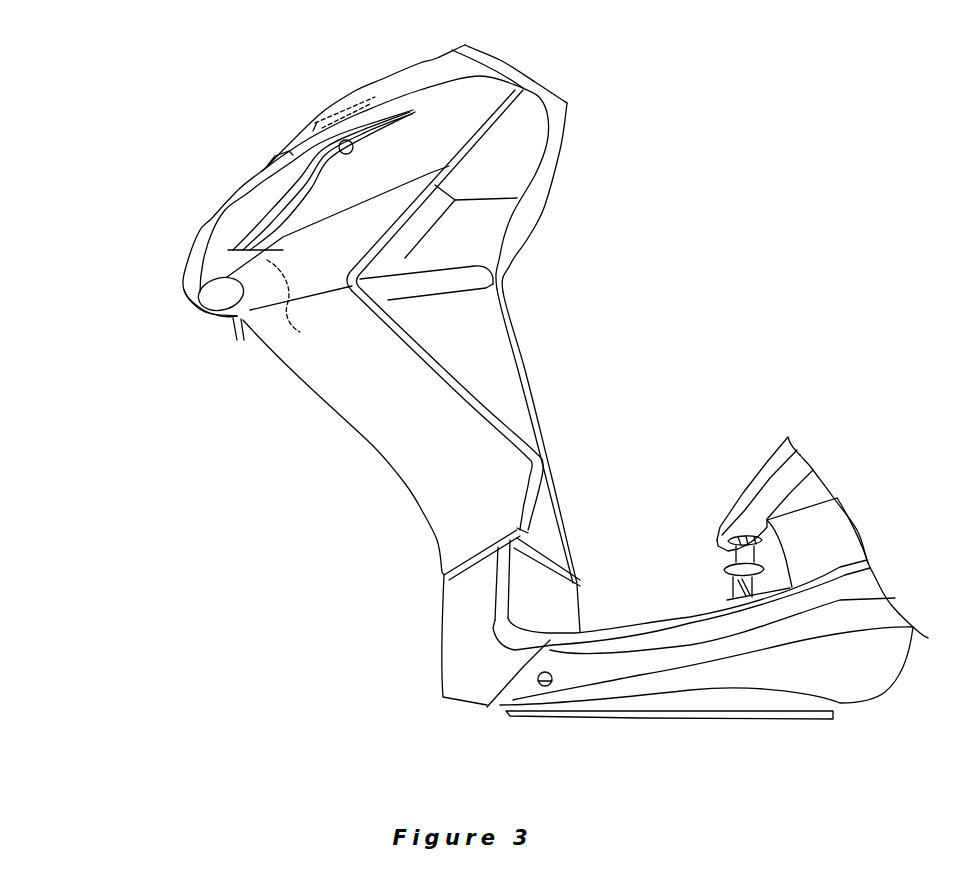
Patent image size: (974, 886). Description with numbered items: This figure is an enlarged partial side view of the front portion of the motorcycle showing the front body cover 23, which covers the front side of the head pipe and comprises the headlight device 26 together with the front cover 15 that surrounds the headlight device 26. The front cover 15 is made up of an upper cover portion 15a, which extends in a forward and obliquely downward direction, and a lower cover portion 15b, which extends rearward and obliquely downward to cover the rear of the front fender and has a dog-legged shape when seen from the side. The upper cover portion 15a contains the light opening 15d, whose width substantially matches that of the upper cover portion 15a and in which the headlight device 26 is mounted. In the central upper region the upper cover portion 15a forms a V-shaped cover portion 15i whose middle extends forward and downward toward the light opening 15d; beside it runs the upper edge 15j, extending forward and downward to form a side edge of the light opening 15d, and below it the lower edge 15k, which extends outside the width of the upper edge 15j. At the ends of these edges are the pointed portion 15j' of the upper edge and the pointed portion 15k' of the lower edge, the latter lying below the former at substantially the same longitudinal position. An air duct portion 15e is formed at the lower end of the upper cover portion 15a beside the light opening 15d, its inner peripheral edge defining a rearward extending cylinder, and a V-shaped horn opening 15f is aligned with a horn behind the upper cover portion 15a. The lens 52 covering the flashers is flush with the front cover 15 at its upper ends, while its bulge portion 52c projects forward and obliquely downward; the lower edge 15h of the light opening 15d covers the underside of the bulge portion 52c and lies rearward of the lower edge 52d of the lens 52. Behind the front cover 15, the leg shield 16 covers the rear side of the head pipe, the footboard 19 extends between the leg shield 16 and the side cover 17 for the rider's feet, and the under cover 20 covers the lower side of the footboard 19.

The front cover 15 is at (385, 70).
The upper cover portion 15a is at (470, 122).
The lower cover portion 15b is at (403, 470).
The light opening 15d is at (347, 154).
The air duct portion 15e is at (300, 307).
The horn opening 15f is at (265, 163).
The lower edge of the light opening 15h is at (235, 322).
The V-shaped cover portion 15i is at (303, 147).
The upper edge 15j is at (215, 164).
The pointed portion 15j' is at (180, 352).
The lower edge 15k is at (154, 200).
The pointed portion 15k' is at (272, 373).
The leg shield 16 is at (527, 337).
The side cover 17 is at (774, 458).
The footboard 19 is at (662, 618).
The under cover 20 is at (784, 725).
The front body cover 23 is at (338, 72).
The headlight device 26 is at (263, 146).
The lens 52 is at (207, 214).
The bulge portion 52c is at (185, 260).
The lower edge of the lens 52d is at (182, 303).